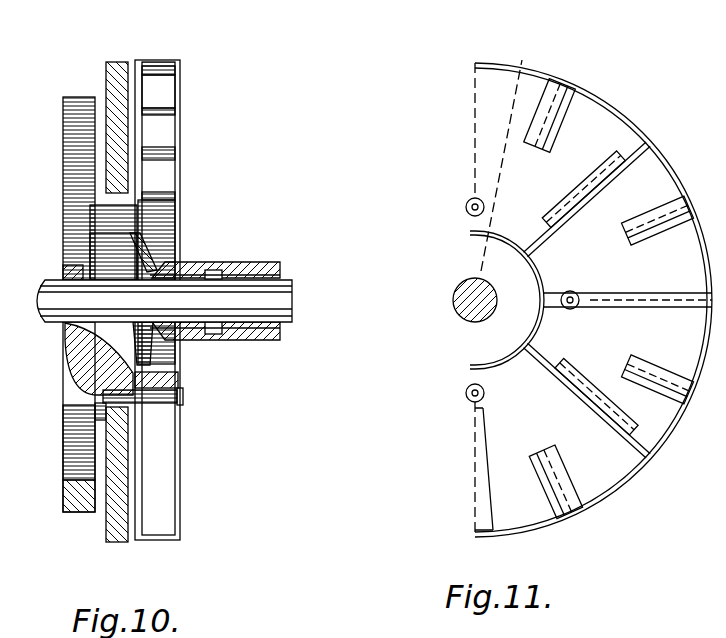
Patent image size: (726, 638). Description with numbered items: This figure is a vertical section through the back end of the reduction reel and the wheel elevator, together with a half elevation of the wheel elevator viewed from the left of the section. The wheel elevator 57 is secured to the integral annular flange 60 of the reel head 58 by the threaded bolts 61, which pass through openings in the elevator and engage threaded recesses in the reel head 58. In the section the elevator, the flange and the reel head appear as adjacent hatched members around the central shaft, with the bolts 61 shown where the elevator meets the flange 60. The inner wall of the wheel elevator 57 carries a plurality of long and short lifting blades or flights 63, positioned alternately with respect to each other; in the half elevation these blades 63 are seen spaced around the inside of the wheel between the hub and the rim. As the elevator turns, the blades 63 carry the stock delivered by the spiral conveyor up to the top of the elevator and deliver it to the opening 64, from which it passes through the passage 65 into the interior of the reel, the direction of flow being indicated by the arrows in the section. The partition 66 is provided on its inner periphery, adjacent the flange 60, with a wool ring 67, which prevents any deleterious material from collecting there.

In FIG. 10, the wheel elevator 57 is at (180, 96).
In FIG. 11, the wheel elevator 57 is at (627, 112).
In FIG. 10, the reel head 58 is at (86, 97).
In FIG. 10, the annular flange 60 is at (92, 211).
In FIG. 10, the threaded bolts 61 is at (184, 396).
In FIG. 10, the lifting blades or flights 63 is at (160, 148).
In FIG. 11, the lifting blades or flights 63 is at (541, 168).
In FIG. 10, the opening 64 is at (95, 238).
In FIG. 10, the passage 65 is at (76, 384).
In FIG. 10, the partition 66 is at (108, 537).
In FIG. 10, the wool ring 67 is at (100, 417).